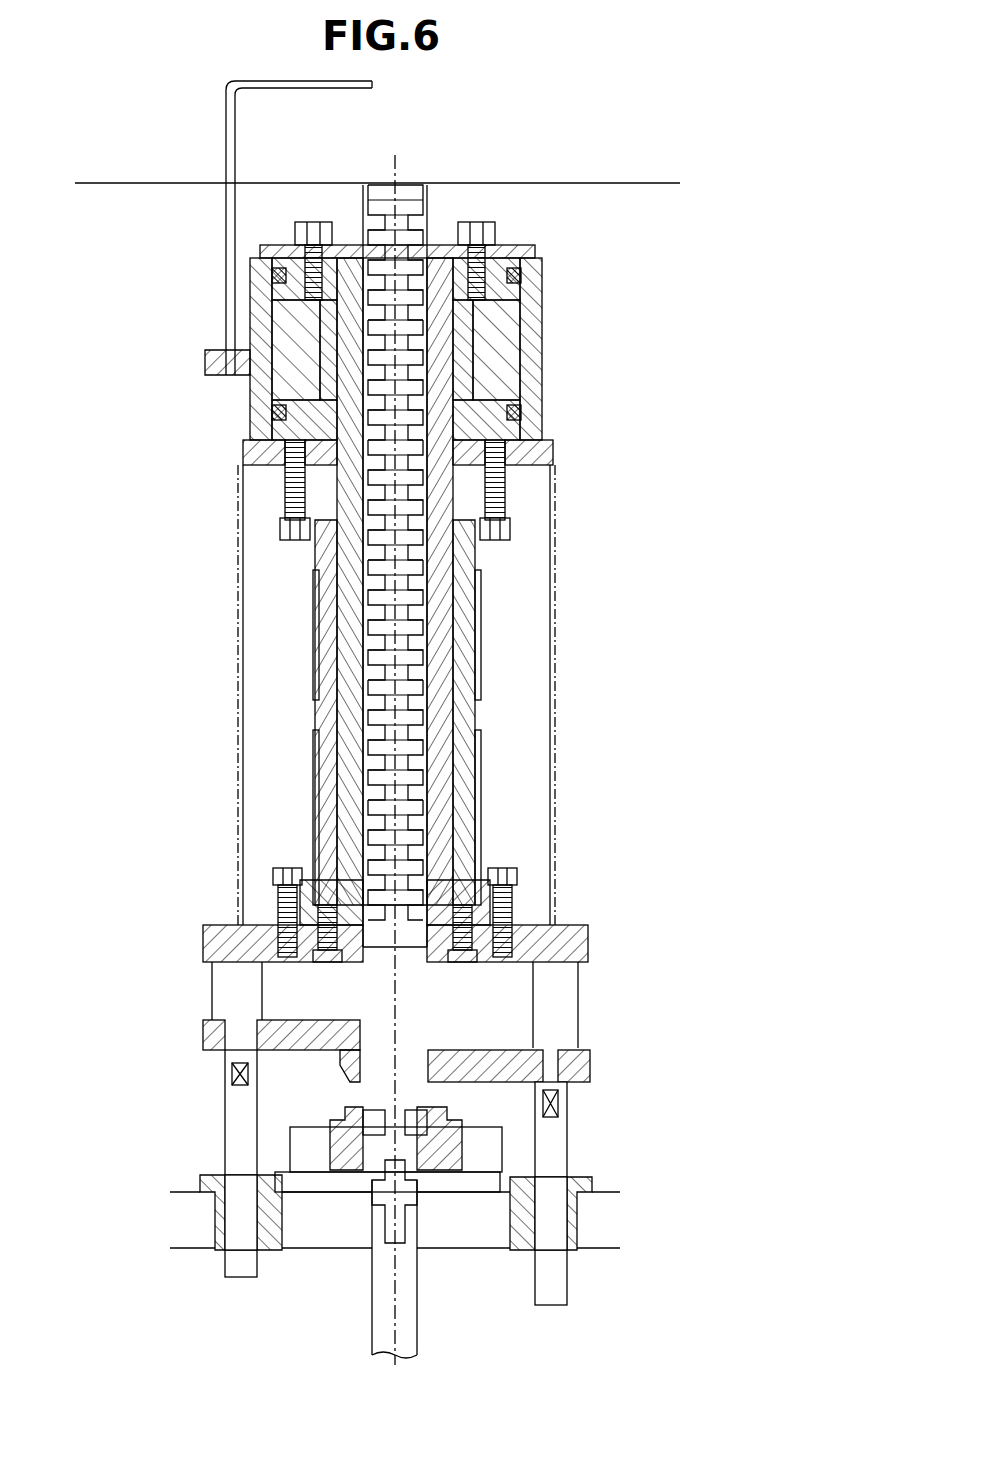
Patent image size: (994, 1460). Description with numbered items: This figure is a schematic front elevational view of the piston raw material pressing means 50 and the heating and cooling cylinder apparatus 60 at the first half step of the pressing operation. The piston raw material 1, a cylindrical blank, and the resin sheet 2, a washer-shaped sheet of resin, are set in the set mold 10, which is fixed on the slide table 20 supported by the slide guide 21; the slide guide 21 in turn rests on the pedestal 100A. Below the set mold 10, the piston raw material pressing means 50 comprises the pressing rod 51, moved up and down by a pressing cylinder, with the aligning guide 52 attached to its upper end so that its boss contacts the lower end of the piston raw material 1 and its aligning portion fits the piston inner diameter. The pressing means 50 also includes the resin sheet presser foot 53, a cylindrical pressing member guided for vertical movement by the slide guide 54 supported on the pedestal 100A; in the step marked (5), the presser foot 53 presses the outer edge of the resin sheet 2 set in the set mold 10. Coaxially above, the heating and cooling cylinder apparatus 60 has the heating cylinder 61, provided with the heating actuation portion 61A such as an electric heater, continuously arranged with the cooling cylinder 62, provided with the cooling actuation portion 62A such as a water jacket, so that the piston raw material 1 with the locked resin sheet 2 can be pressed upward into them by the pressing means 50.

The piston raw material 1 is at (321, 743).
The resin sheet 2 is at (372, 1112).
The step 5 is at (522, 1193).
The set mold 10 is at (340, 1122).
The slide table 20 is at (345, 1165).
The slide guide 21 is at (300, 1160).
The piston raw material pressing means 50 is at (389, 1259).
The pressing rod 51 is at (405, 1336).
The aligning guide 52 is at (408, 1192).
The resin sheet presser foot 53 is at (340, 1062).
The slide guide 54 is at (225, 1080).
The heating and cooling cylinder apparatus 60 is at (300, 618).
The heating cylinder 61 is at (440, 778).
The heating actuation portion 61A is at (480, 725).
The cooling cylinder 62 is at (490, 350).
The cooling actuation portion 62A is at (488, 320).
The pedestal 100A is at (185, 1222).